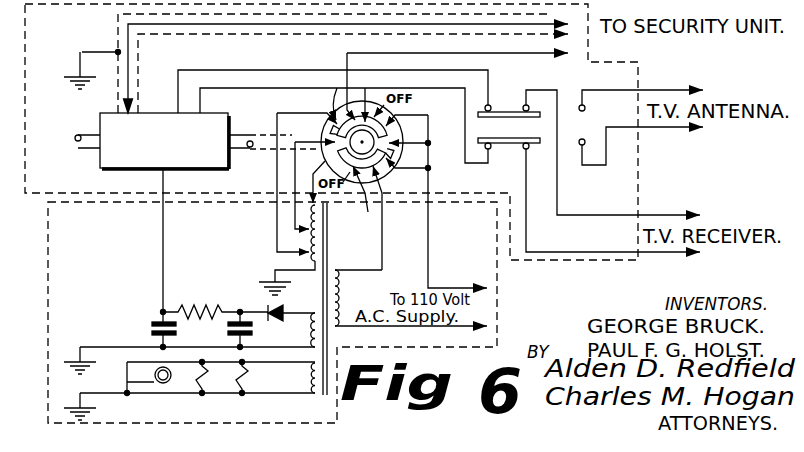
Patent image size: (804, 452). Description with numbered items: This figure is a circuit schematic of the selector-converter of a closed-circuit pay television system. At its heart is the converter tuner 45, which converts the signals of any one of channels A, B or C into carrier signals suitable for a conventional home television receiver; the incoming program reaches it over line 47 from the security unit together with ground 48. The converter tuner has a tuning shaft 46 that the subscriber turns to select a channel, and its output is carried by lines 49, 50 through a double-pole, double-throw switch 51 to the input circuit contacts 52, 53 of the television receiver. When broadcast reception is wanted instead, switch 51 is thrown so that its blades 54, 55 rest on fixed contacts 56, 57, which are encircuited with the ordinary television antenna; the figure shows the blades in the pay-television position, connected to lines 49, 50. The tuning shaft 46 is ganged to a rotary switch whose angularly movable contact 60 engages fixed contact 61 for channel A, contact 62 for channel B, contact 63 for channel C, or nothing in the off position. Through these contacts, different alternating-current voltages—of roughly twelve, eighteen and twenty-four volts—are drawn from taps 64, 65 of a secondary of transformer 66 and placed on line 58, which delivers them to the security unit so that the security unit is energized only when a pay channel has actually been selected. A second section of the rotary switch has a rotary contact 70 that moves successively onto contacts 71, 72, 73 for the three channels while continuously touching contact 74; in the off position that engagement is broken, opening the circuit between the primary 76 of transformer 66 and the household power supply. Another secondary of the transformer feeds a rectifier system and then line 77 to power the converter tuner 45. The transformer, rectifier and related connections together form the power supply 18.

The power supply 18 is at (497, 281).
The converter tuner 45 is at (100, 120).
The tuning shaft 46 is at (92, 149).
The line 47 is at (131, 84).
The ground 48 is at (78, 66).
The line 49 is at (201, 70).
The line 50 is at (229, 88).
The double-pole, double-throw switch 51 is at (507, 149).
The input circuit contact 52 is at (525, 100).
The input circuit contact 53 is at (527, 150).
The blade 54 is at (497, 110).
The blade 55 is at (488, 152).
The fixed contact 56 is at (592, 108).
The fixed contact 57 is at (580, 148).
The line 58 is at (347, 53).
The angularly movable contact 60 is at (364, 95).
The fixed contact 61 is at (334, 94).
The contact 62 is at (327, 139).
The contact 63 is at (333, 156).
The tap 64 is at (306, 250).
The tap 65 is at (306, 227).
The transformer 66 is at (334, 229).
The rotary contact 70 is at (354, 198).
The contact 71 is at (403, 156).
The contact 72 is at (402, 127).
The contact 73 is at (392, 120).
The contact 74 is at (376, 168).
The primary 76 is at (343, 296).
The line 77 is at (166, 262).